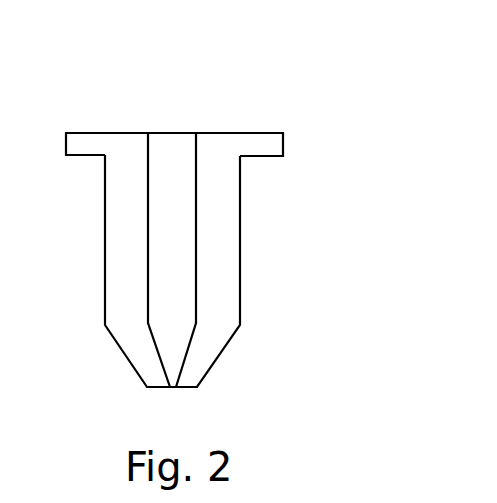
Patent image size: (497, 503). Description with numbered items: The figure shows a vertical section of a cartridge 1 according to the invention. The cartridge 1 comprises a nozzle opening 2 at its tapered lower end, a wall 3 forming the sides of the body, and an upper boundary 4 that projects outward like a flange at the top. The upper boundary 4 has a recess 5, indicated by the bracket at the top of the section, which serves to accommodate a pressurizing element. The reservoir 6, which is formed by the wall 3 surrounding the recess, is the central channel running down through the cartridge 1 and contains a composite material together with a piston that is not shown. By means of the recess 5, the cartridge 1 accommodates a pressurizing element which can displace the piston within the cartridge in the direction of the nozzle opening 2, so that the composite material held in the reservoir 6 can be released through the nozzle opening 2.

The cartridge 1 is at (328, 99).
The nozzle opening 2 is at (210, 393).
The wall 3 is at (240, 241).
The upper boundary 4 is at (245, 143).
The recess 5 is at (173, 112).
The reservoir 6 is at (183, 294).